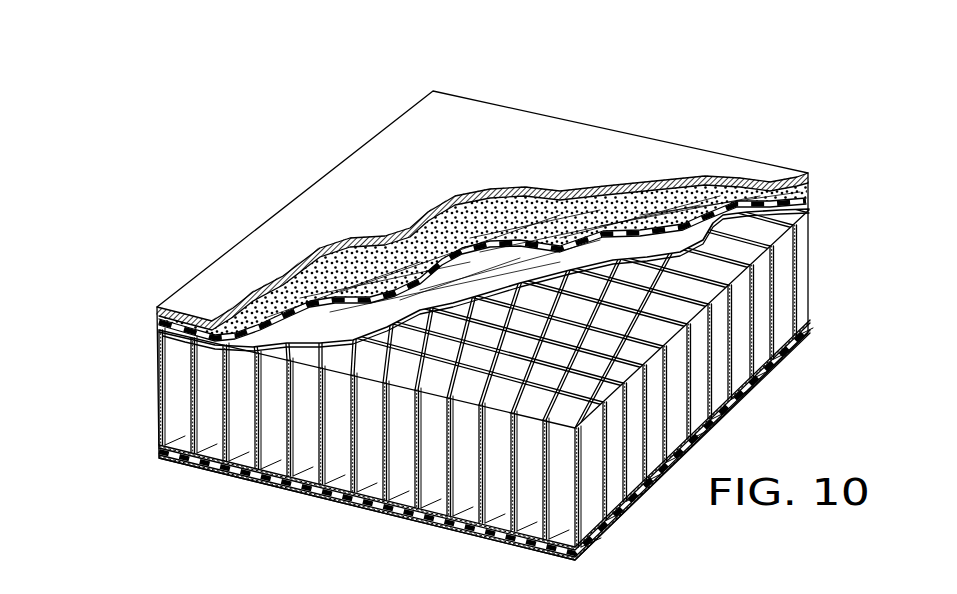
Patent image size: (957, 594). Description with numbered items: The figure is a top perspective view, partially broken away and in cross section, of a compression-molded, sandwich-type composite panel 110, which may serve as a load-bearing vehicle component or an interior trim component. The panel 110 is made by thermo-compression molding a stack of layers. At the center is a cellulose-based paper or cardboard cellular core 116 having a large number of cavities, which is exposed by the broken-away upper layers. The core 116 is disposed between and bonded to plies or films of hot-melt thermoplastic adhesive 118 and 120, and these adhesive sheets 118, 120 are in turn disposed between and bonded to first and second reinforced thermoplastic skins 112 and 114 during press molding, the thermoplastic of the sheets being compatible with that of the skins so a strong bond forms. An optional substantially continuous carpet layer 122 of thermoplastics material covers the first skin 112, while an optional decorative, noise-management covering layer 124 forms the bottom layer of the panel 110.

The composite panel 110 is at (718, 78).
The first reinforced thermoplastic skin 112 is at (159, 321).
The second reinforced thermoplastic skin 114 is at (160, 452).
The cellular core 116 is at (157, 402).
The hot-melt adhesive sheet 118 is at (293, 340).
The hot-melt adhesive sheet 120 is at (192, 438).
The carpet layer 122 is at (157, 308).
The covering layer 124 is at (190, 465).